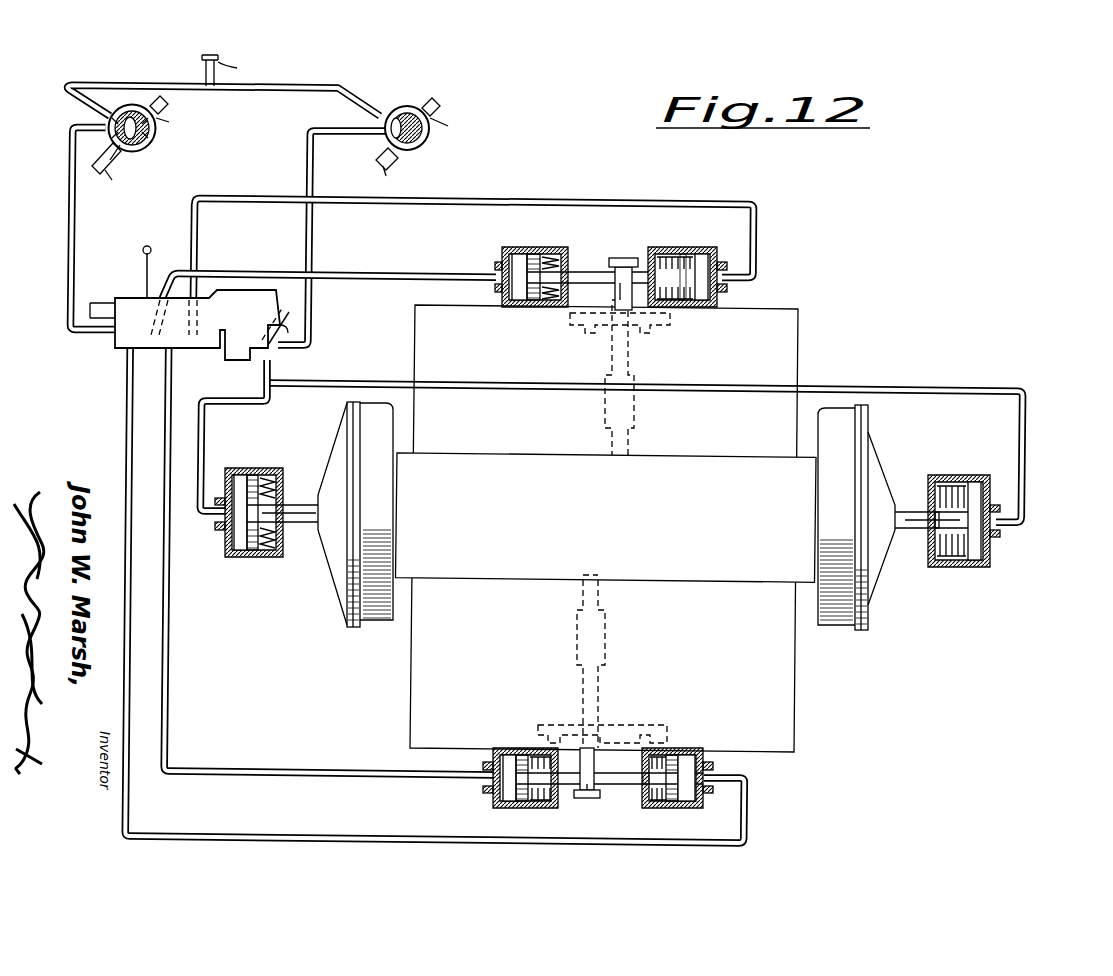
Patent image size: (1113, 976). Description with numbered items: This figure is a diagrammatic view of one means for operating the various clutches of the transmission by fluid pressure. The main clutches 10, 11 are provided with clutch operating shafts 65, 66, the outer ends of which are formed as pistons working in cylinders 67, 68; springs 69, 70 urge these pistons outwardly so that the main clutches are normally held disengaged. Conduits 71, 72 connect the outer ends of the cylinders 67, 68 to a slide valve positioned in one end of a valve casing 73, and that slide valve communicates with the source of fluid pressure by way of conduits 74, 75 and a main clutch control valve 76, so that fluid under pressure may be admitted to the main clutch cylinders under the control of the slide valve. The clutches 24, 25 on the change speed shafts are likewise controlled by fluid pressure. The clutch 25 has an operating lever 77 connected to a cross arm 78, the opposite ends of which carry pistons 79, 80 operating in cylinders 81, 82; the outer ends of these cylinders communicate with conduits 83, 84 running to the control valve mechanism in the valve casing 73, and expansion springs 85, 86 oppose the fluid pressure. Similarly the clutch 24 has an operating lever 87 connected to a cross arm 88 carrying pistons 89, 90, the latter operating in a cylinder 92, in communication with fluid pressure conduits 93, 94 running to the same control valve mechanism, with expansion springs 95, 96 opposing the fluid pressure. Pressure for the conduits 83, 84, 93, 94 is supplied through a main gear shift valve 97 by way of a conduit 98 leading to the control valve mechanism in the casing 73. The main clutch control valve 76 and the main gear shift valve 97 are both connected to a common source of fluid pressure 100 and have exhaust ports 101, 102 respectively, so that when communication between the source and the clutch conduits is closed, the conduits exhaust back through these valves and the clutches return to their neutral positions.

The main clutch 10 is at (369, 398).
The main clutch 11 is at (836, 410).
The clutch 24 is at (600, 596).
The clutch 25 is at (626, 441).
The clutch operating shaft 65 is at (297, 507).
The clutch operating shaft 66 is at (902, 511).
The cylinder 67 is at (252, 510).
The cylinder 68 is at (973, 517).
The spring 69 is at (283, 470).
The spring 70 is at (928, 545).
The conduit 71 is at (205, 426).
The conduit 72 is at (1026, 426).
The valve casing 73 is at (234, 303).
The conduit 74 is at (296, 312).
The conduit 75 is at (318, 335).
The main clutch control valve 76 is at (407, 106).
The operating lever 77 is at (619, 285).
The cross arm 78 is at (621, 262).
The piston 79 is at (528, 305).
The piston 80 is at (703, 268).
The cylinder 81 is at (530, 278).
The cylinder 82 is at (722, 249).
The conduit 83 is at (393, 275).
The conduit 84 is at (198, 253).
The expansion spring 85 is at (562, 276).
The expansion spring 86 is at (731, 280).
The operating lever 87 is at (588, 762).
The cross arm 88 is at (613, 784).
The piston 89 is at (499, 765).
The piston 90 is at (677, 762).
The cylinder 92 is at (699, 748).
The fluid pressure conduit 93 is at (176, 393).
The fluid pressure conduit 94 is at (126, 400).
The expansion spring 95 is at (531, 748).
The expansion spring 96 is at (646, 780).
The main gear shift valve 97 is at (133, 104).
The conduit 98 is at (69, 208).
The source of fluid pressure 100 is at (206, 68).
The exhaust port 101 is at (147, 150).
The exhaust port 102 is at (374, 158).